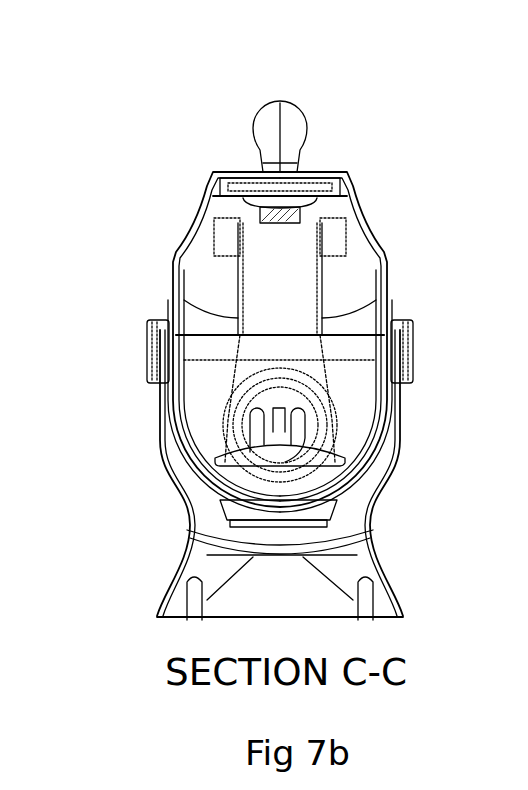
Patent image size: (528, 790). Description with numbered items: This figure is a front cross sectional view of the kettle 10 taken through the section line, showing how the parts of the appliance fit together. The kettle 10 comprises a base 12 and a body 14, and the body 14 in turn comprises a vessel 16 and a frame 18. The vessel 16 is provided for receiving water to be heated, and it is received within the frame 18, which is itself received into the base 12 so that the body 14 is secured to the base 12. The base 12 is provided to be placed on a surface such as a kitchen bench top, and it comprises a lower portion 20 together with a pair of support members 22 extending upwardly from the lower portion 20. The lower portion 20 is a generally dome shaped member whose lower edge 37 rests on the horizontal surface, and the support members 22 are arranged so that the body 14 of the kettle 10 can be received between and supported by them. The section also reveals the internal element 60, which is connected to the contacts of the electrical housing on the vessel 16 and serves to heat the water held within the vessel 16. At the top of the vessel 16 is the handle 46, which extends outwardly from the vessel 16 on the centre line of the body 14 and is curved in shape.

The kettle 10 is at (455, 252).
The base 12 is at (403, 587).
The body 14 is at (413, 200).
The vessel 16 is at (193, 215).
The frame 18 is at (177, 410).
The lower portion 20 is at (163, 567).
The support members 22 is at (156, 322).
The lower edge 37 is at (160, 622).
The handle 46 is at (302, 120).
The internal element 60 is at (327, 457).